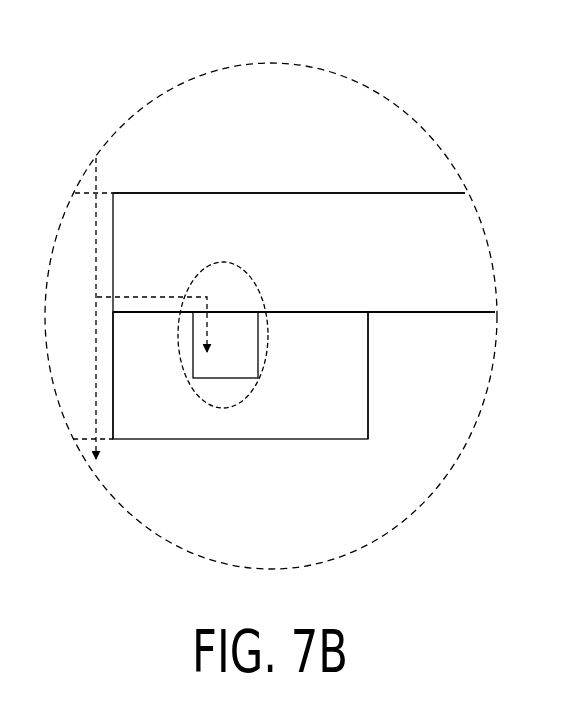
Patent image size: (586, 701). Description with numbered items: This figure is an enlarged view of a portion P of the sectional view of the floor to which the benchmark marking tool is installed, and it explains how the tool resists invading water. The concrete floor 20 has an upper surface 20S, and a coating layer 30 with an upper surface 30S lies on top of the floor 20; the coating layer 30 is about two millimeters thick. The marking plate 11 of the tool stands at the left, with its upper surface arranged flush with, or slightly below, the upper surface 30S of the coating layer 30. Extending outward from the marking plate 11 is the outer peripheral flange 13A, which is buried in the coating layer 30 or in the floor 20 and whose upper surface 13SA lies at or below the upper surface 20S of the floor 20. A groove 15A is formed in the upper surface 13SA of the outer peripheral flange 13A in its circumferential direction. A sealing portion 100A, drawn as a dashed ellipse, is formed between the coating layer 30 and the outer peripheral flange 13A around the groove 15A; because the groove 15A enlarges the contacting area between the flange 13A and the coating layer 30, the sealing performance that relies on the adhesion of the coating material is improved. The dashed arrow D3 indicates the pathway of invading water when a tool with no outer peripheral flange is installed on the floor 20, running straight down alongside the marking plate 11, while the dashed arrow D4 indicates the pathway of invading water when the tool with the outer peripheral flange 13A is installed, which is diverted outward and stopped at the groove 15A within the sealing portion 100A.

The portion P is at (383, 96).
The marking plate 11 is at (58, 332).
The coating layer 30 is at (413, 194).
The upper surface of coating layer 30S is at (270, 193).
The floor 20 is at (362, 499).
The upper surface of floor 20S is at (445, 313).
The outer peripheral flange 13A is at (240, 440).
The upper surface of outer peripheral flange 13SA is at (315, 313).
The groove 15A is at (212, 368).
The sealing portion 100A is at (255, 283).
The arrow D3 is at (97, 405).
The arrow D4 is at (155, 295).